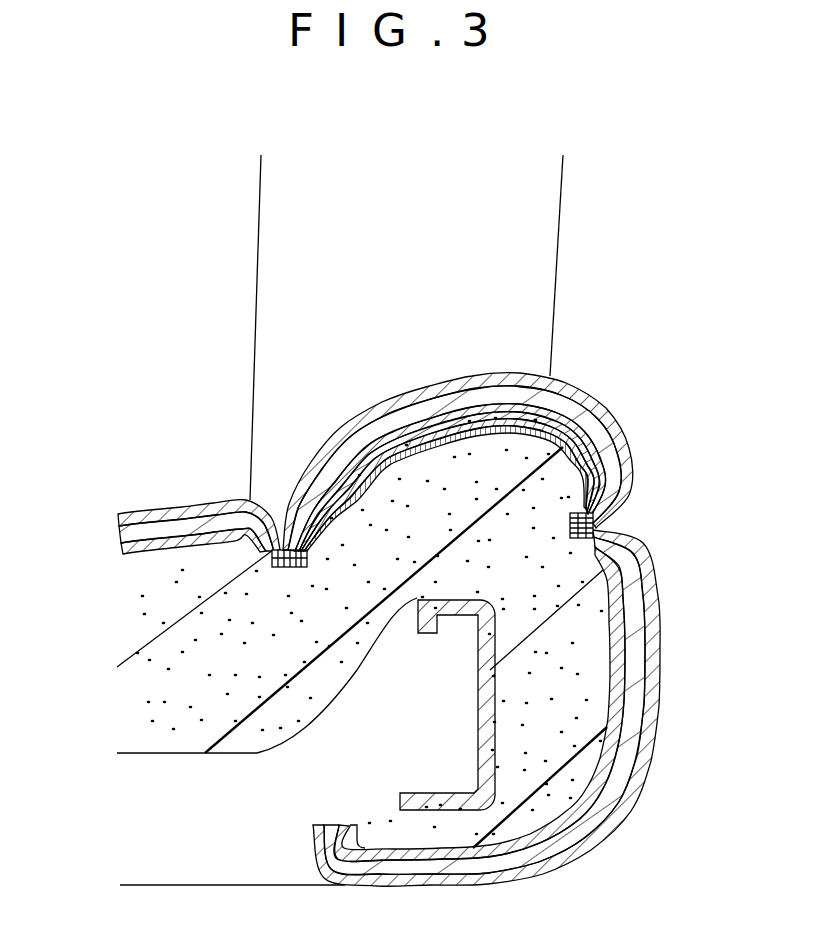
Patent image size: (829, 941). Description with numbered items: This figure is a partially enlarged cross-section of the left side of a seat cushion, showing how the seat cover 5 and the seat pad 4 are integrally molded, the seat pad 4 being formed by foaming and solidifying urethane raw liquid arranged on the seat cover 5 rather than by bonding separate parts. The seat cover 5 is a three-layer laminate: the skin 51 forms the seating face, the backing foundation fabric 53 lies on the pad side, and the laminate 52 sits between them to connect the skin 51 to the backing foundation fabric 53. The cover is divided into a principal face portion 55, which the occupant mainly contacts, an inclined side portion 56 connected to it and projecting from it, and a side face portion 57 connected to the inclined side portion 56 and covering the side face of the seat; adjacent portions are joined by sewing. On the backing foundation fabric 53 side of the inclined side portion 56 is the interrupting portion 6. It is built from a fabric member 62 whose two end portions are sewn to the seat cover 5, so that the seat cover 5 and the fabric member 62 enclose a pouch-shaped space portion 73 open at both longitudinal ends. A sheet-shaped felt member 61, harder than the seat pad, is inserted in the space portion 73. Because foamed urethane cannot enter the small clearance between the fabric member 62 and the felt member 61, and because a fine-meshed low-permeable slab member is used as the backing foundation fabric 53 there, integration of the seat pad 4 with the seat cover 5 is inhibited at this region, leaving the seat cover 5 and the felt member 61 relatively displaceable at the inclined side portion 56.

The seat pad 4 is at (160, 708).
The seat cover 5 is at (444, 617).
The skin 51 is at (122, 519).
The laminate 52 is at (126, 534).
The backing foundation fabric 53 is at (126, 550).
The principal face portion 55 is at (162, 512).
The inclined side portion 56 is at (358, 423).
The side face portion 57 is at (660, 662).
The interrupting portion 6 is at (487, 439).
The felt member 61 is at (576, 398).
The fabric member 62 is at (600, 430).
The space portion 73 is at (494, 412).